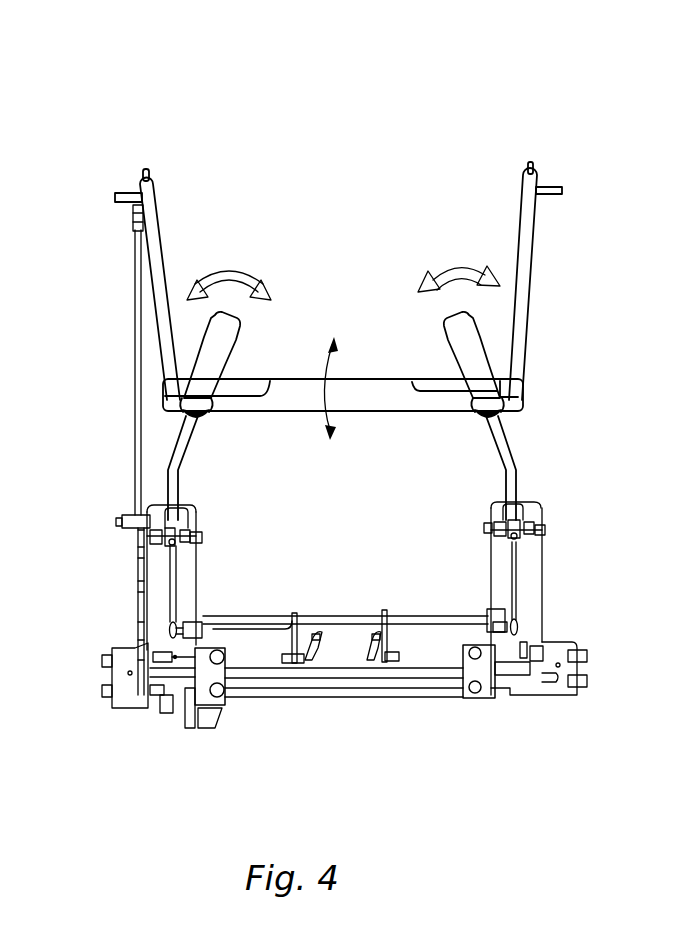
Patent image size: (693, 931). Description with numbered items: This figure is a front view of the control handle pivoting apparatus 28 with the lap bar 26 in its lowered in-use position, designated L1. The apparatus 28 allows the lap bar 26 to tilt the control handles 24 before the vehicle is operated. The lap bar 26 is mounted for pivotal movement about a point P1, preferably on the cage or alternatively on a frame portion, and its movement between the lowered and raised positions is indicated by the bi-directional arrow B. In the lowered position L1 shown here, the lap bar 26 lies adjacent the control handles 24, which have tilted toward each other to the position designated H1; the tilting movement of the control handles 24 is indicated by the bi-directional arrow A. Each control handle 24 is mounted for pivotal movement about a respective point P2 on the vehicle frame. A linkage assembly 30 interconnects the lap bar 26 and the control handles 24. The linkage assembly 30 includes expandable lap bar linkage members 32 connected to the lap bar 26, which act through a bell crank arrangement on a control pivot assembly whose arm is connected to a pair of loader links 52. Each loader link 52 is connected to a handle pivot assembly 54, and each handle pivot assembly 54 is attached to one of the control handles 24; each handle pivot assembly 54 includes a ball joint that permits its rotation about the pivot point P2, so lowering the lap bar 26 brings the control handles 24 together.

The control handle pivoting apparatus 28 is at (401, 112).
The point P1 is at (120, 198).
The bi-directional arrow A is at (222, 272).
The control handles 24 is at (233, 338).
The position H1 is at (213, 328).
The lap bar linkage members 32 is at (139, 434).
The lap bar 26 is at (385, 411).
The bi-directional arrow B is at (320, 423).
The lowered position L1 is at (357, 412).
The handle pivot assembly 54 is at (180, 511).
The point P2 is at (165, 552).
The loader links 52 is at (144, 596).
The linkage assembly 30 is at (320, 708).